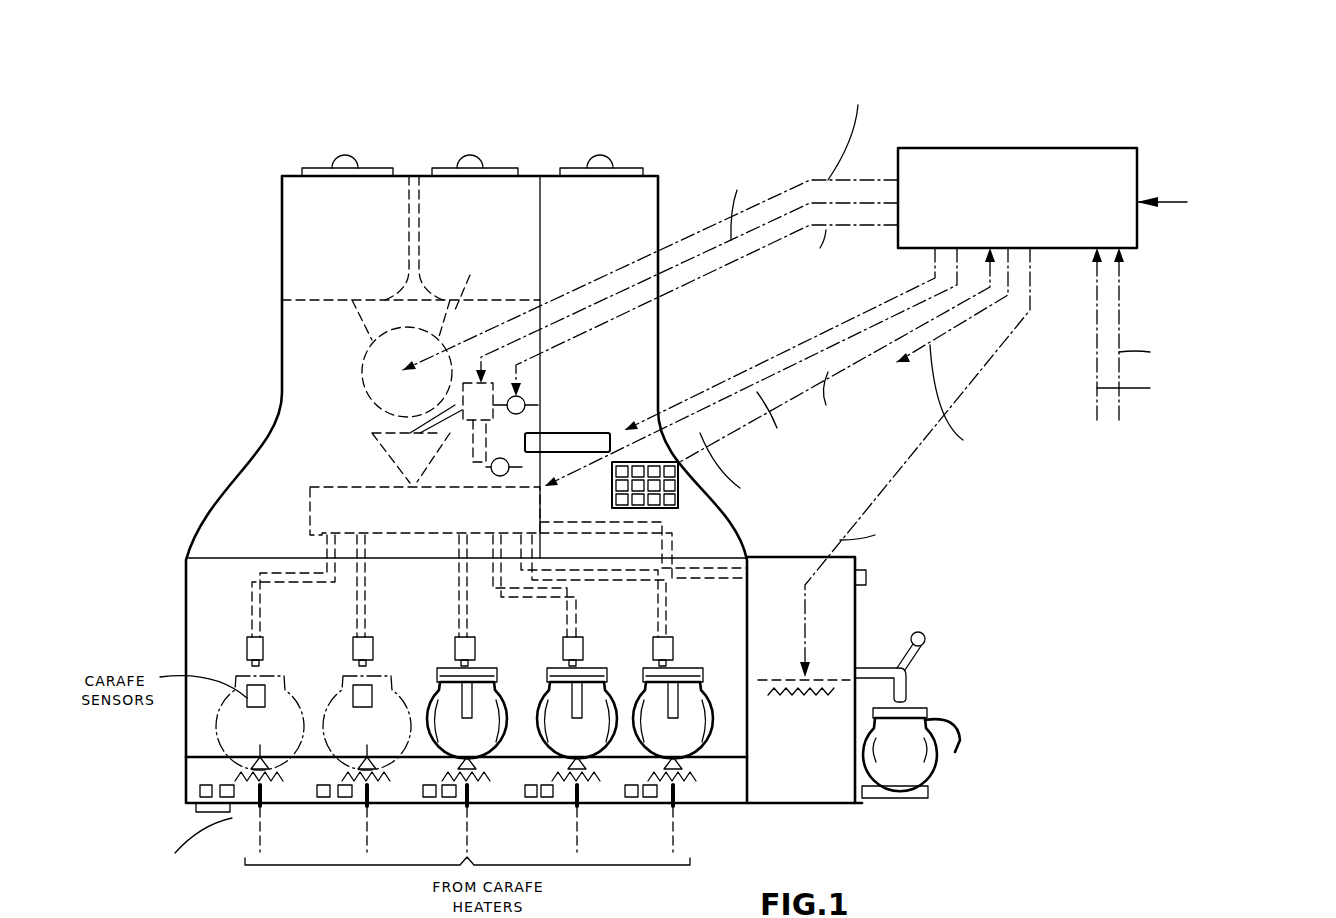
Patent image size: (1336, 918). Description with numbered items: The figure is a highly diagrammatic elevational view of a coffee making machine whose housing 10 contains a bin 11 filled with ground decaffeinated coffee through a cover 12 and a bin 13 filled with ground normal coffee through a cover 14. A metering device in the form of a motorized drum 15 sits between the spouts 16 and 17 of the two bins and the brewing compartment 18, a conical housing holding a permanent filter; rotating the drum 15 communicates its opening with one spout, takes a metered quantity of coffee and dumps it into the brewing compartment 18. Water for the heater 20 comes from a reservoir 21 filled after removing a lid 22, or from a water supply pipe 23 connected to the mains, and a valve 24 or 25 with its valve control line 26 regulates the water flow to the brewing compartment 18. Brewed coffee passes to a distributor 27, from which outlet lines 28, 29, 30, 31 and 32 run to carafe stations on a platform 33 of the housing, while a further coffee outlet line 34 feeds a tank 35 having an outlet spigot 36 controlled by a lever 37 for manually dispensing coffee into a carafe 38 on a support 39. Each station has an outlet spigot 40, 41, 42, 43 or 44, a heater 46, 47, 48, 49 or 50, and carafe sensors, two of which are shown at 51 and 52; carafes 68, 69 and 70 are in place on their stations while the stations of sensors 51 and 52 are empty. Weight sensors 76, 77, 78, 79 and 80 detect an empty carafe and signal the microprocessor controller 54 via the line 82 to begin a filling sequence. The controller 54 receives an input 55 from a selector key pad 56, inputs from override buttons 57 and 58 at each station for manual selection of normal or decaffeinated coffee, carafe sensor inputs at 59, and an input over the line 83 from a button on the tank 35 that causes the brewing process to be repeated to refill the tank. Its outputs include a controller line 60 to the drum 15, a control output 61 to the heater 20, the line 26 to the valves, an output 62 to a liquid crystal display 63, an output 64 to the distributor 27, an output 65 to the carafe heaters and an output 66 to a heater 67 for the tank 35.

The housing 10 is at (293, 375).
The bin 11 is at (292, 188).
The cover 12 is at (305, 166).
The bin 13 is at (523, 188).
The cover 14 is at (440, 166).
The motorized drum 15 is at (377, 362).
The spout 16 is at (376, 300).
The spout 17 is at (411, 258).
The brewing compartment 18 is at (387, 462).
The heater 20 is at (451, 422).
The reservoir 21 is at (653, 177).
The lid 22 is at (575, 166).
The water supply pipe 23 is at (475, 470).
The valve 24 is at (530, 385).
The valve 25 is at (515, 425).
The valve control line 26 is at (683, 292).
The distributor 27 is at (330, 508).
The outlet line 28 is at (262, 606).
The outlet line 29 is at (366, 604).
The outlet line 30 is at (458, 594).
The outlet line 31 is at (582, 602).
The outlet line 32 is at (670, 606).
The platform 33 is at (190, 775).
The coffee outlet line 34 is at (673, 537).
The tank 35 is at (856, 610).
The outlet spigot 36 is at (908, 686).
The lever 37 is at (924, 642).
The carafe 38 is at (933, 760).
The support 39 is at (915, 800).
The outlet spigot 40 is at (264, 648).
The outlet spigot 41 is at (374, 648).
The outlet spigot 42 is at (476, 648).
The outlet spigot 43 is at (584, 648).
The outlet spigot 44 is at (674, 648).
The heater 46 is at (283, 785).
The heater 47 is at (390, 785).
The heater 48 is at (496, 785).
The heater 49 is at (599, 785).
The heater 50 is at (701, 785).
The carafe sensor 51 is at (247, 690).
The carafe sensor 52 is at (353, 692).
The microprocessor controller 54 is at (1003, 147).
The input 55 is at (693, 420).
The selector key pad 56 is at (678, 500).
The override button 57 is at (200, 790).
The override button 58 is at (222, 810).
The input 59 is at (1120, 298).
The controller line 60 is at (875, 178).
The control output 61 is at (685, 245).
The output 62 is at (722, 380).
The display 63 is at (590, 432).
The output 64 is at (782, 365).
The output 65 is at (948, 320).
The output 66 is at (876, 480).
The heater 67 is at (802, 700).
The carafe 68 is at (487, 700).
The carafe 69 is at (598, 705).
The carafe 70 is at (704, 712).
The weight sensor 76 is at (259, 752).
The weight sensor 77 is at (366, 753).
The weight sensor 78 is at (466, 752).
The weight sensor 79 is at (576, 752).
The weight sensor 80 is at (672, 752).
The line 82 is at (1097, 270).
The line 83 is at (1172, 200).